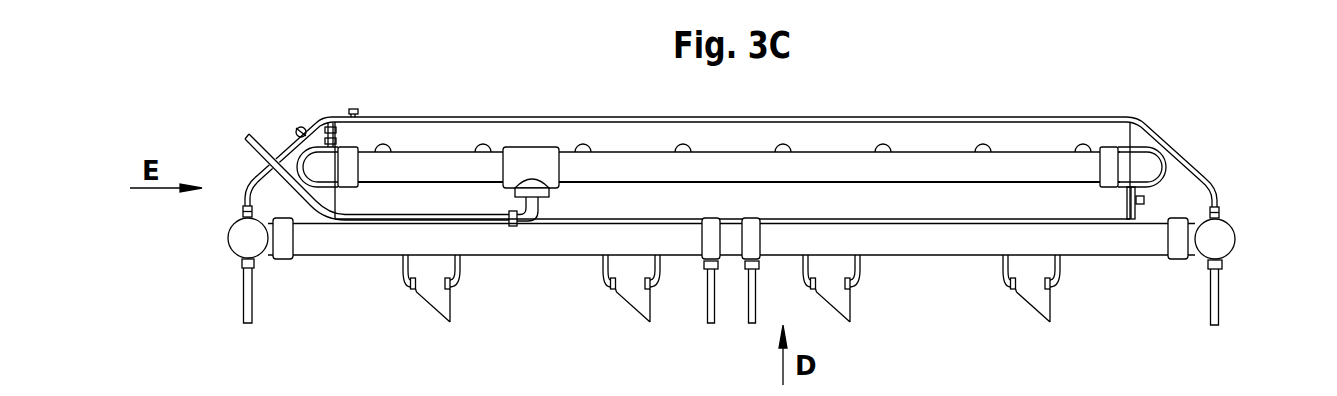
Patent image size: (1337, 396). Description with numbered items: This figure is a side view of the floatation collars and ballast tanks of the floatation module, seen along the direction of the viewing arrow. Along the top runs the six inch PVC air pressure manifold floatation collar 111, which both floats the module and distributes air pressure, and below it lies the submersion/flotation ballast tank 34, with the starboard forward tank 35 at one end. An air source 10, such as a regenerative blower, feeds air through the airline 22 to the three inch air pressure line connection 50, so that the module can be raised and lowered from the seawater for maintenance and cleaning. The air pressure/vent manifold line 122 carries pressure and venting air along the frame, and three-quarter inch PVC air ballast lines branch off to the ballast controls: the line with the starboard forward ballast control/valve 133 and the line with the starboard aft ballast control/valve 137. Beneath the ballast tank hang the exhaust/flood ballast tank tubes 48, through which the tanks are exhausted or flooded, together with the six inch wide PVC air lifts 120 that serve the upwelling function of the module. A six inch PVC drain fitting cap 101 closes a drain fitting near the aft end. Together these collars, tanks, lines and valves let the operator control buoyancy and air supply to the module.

The air source 10 is at (224, 116).
The airline 22 is at (328, 167).
The submersion/flotation ballast tank 34 is at (731, 226).
The starboard forward tank 35 is at (205, 253).
The exhaust/flood ballast tank tubes 48 is at (687, 311).
The air pressure line connection 50 is at (546, 201).
The PVC drain fitting cap 101 is at (1197, 173).
The PVC air pressure manifold floatation collar 111 is at (731, 180).
The PVC air lifts 120 is at (731, 304).
The air pressure/vent manifold line 122 is at (293, 91).
The PVC air ballast line with starboard forward ballast control/valve 133 is at (266, 102).
The PVC air ballast line and starboard aft ballast control/valve 137 is at (1242, 207).